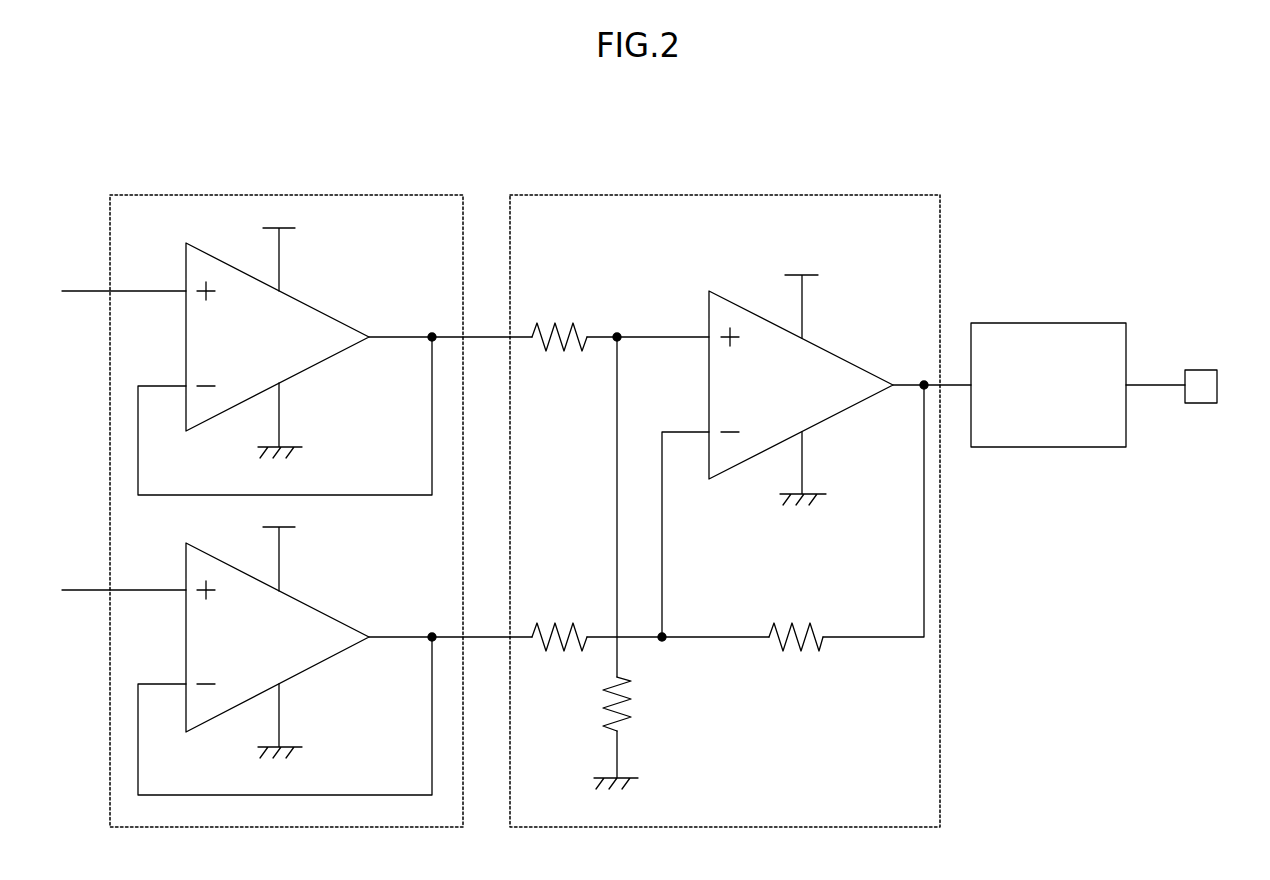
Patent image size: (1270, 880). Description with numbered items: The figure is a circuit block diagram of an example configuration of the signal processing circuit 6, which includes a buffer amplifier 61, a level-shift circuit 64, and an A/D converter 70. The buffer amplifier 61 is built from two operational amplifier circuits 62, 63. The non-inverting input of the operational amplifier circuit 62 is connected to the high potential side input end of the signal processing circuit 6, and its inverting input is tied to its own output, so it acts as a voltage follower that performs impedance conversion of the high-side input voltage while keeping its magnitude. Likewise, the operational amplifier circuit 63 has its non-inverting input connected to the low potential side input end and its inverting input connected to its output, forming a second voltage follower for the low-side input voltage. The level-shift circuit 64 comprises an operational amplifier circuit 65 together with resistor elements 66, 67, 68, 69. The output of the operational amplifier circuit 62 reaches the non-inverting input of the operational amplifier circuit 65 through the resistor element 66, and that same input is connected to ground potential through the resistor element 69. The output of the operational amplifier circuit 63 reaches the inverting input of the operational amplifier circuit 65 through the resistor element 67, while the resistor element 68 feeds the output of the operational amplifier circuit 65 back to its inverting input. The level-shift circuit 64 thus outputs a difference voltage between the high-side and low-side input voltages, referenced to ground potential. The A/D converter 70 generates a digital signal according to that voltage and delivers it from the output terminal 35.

The signal processing circuit 6 is at (962, 121).
The buffer amplifier 61 is at (385, 195).
The operational amplifier circuit 62 is at (307, 305).
The operational amplifier circuit 63 is at (307, 605).
The level-shift circuit 64 is at (815, 195).
The operational amplifier circuit 65 is at (832, 352).
The resistor element 66 is at (555, 322).
The resistor element 67 is at (555, 622).
The resistor element 68 is at (792, 622).
The resistor element 69 is at (630, 700).
The A/D converter 70 is at (1043, 323).
The output terminal 35 is at (1205, 370).